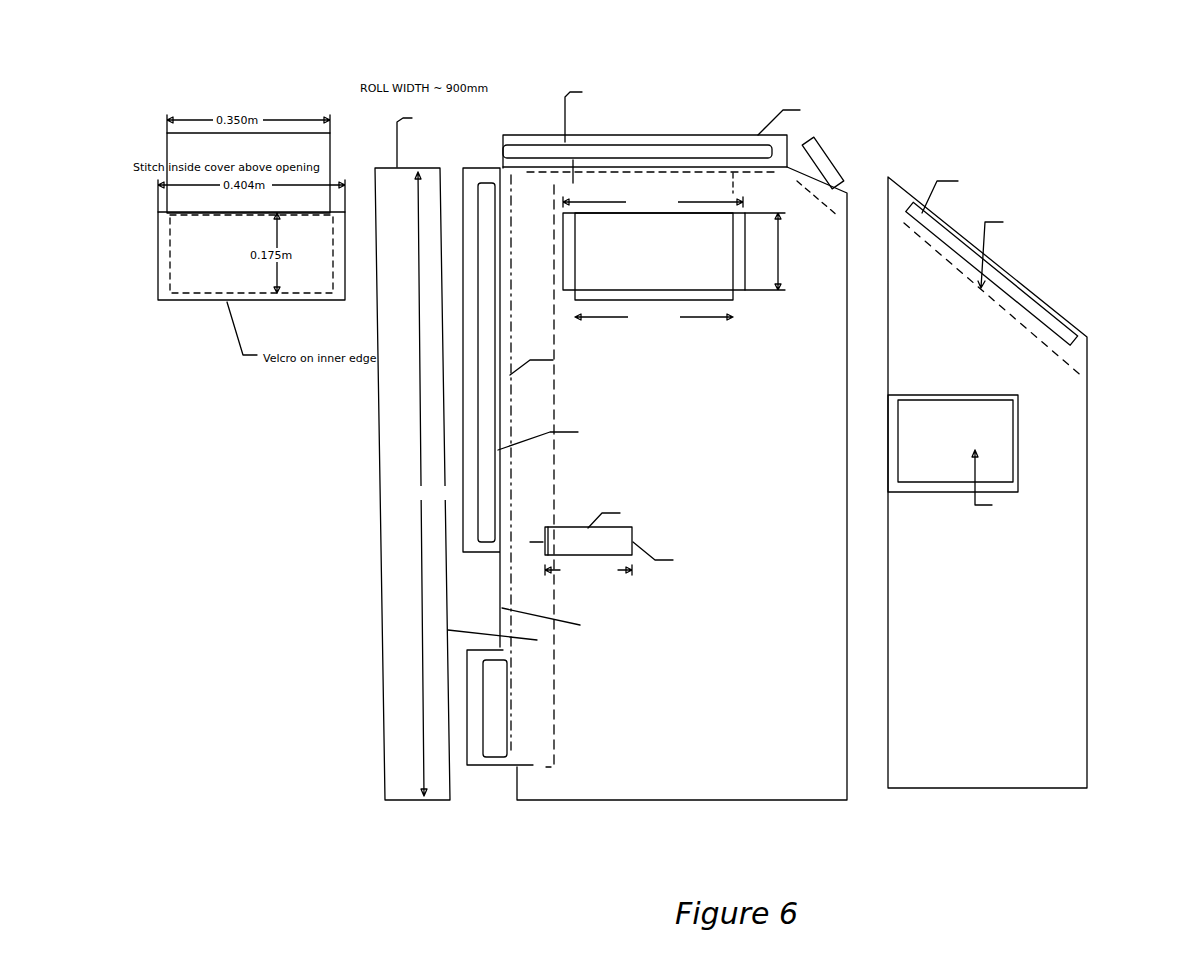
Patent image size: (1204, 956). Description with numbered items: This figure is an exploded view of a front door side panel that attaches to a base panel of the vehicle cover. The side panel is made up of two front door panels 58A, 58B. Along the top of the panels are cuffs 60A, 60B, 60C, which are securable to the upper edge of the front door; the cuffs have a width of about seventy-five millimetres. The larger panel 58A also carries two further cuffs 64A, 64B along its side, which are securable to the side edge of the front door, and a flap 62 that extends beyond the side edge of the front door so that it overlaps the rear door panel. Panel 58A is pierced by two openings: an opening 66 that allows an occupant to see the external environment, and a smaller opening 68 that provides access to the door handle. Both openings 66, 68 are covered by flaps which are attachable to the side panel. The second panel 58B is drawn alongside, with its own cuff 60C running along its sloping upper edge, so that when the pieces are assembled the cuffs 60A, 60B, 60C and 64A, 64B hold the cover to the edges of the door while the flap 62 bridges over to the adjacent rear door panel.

The front door panel 58A is at (650, 441).
The front door panel 58B is at (1029, 482).
The cuff 60A is at (716, 129).
The cuff 60B is at (827, 158).
The cuff 60C is at (1037, 305).
The flap 62 is at (398, 745).
The cuff 64A is at (492, 517).
The cuff 64B is at (483, 752).
The opening 66 is at (664, 268).
The opening 68 is at (664, 544).